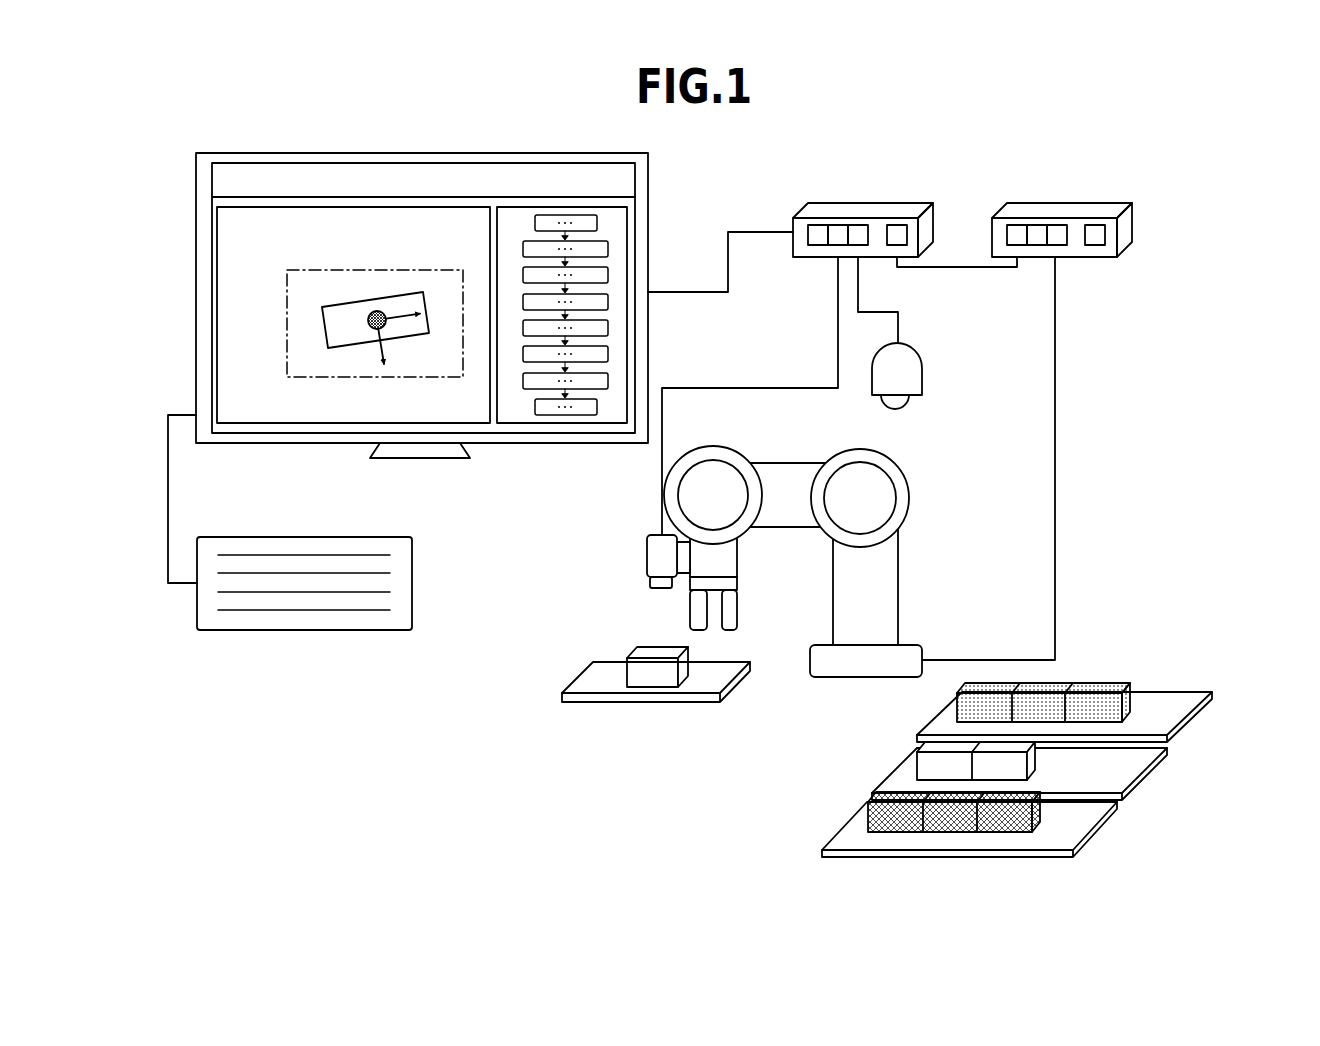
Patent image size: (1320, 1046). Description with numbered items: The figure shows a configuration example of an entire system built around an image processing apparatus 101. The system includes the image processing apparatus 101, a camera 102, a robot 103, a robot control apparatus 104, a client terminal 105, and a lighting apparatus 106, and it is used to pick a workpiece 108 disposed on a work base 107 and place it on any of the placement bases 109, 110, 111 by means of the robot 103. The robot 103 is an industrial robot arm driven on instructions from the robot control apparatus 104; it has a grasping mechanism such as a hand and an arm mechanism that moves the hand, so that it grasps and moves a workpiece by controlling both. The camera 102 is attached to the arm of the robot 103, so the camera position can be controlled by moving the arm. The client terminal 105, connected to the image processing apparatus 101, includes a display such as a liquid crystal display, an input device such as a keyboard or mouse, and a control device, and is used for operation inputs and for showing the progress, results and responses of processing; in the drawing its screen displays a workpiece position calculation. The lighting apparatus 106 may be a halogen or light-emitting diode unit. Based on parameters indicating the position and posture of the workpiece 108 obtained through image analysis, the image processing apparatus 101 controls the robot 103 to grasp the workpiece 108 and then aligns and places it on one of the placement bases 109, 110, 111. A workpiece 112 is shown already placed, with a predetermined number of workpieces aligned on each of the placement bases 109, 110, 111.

The image processing apparatus 101 is at (859, 203).
The camera 102 is at (647, 552).
The robot 103 is at (910, 498).
The robot control apparatus 104 is at (1072, 203).
The client terminal 105 is at (301, 443).
The lighting apparatus 106 is at (923, 375).
The work base 107 is at (582, 673).
The workpiece 108 is at (323, 322).
The placement base 109 is at (1100, 828).
The placement base 110 is at (1147, 770).
The placement base 111 is at (1192, 718).
The workpiece 112 is at (1105, 683).